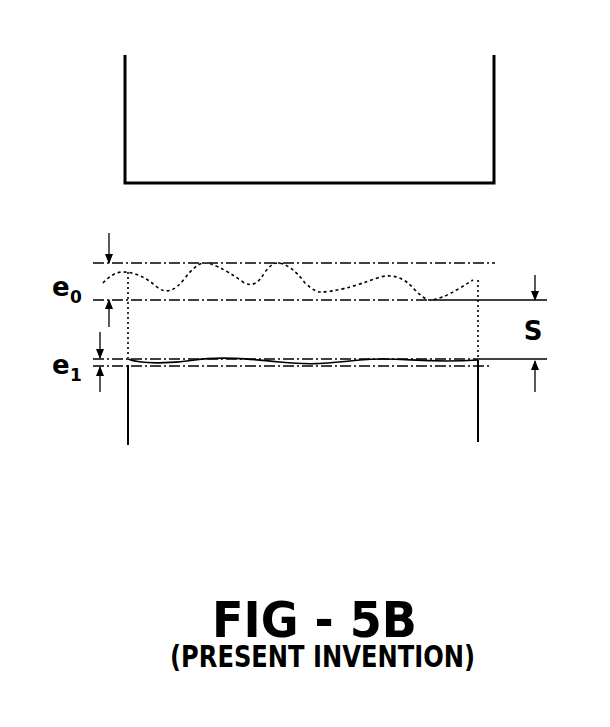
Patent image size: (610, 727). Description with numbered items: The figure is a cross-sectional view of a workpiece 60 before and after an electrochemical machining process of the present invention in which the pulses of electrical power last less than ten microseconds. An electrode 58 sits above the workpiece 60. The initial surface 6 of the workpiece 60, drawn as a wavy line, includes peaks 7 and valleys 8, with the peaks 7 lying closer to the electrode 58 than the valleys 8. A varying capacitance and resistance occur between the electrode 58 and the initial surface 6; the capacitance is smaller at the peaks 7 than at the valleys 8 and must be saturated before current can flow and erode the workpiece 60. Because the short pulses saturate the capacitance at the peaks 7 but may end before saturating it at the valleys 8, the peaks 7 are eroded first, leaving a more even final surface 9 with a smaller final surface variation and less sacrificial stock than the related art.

The electrode 58 is at (472, 103).
The peaks 7 is at (277, 263).
The initial surface 6 is at (398, 268).
The valleys 8 is at (432, 299).
The final surface 9 is at (292, 360).
The workpiece 60 is at (484, 395).